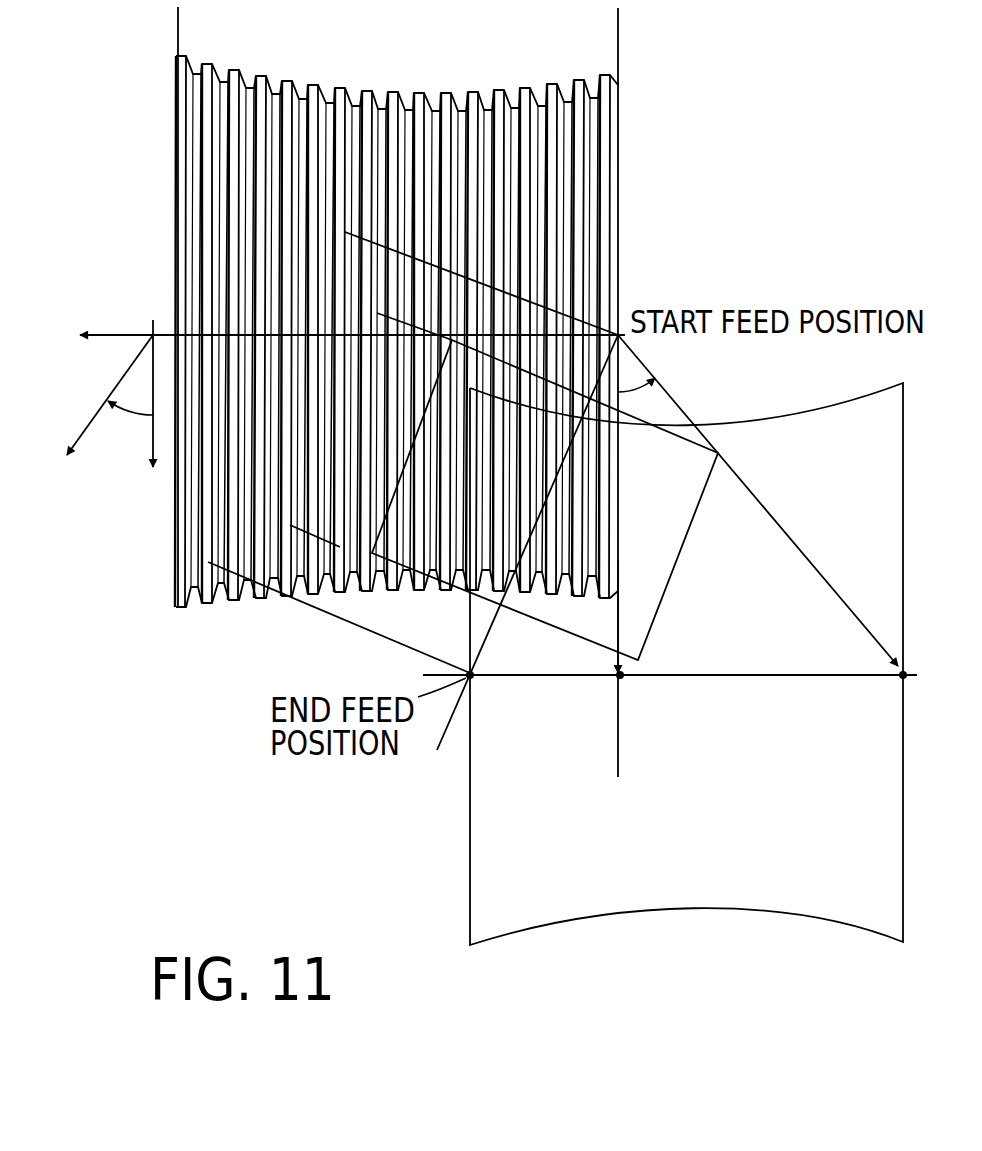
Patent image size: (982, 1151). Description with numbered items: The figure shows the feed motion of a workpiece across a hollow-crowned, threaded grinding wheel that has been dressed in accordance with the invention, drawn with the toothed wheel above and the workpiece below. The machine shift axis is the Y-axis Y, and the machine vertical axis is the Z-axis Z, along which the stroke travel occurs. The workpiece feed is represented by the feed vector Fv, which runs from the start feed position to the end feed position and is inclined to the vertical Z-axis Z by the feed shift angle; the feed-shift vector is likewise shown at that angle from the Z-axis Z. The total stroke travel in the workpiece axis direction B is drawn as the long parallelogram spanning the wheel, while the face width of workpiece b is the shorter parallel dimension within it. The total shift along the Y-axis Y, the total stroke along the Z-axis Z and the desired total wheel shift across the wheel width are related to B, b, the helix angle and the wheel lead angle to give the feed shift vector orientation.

The Y-axis Y is at (338, 333).
The Z-axis Z is at (155, 413).
The total stroke travel in the workpiece axis direction B is at (208, 562).
The face width of workpiece b is at (393, 328).
The feed vector Fv is at (758, 500).